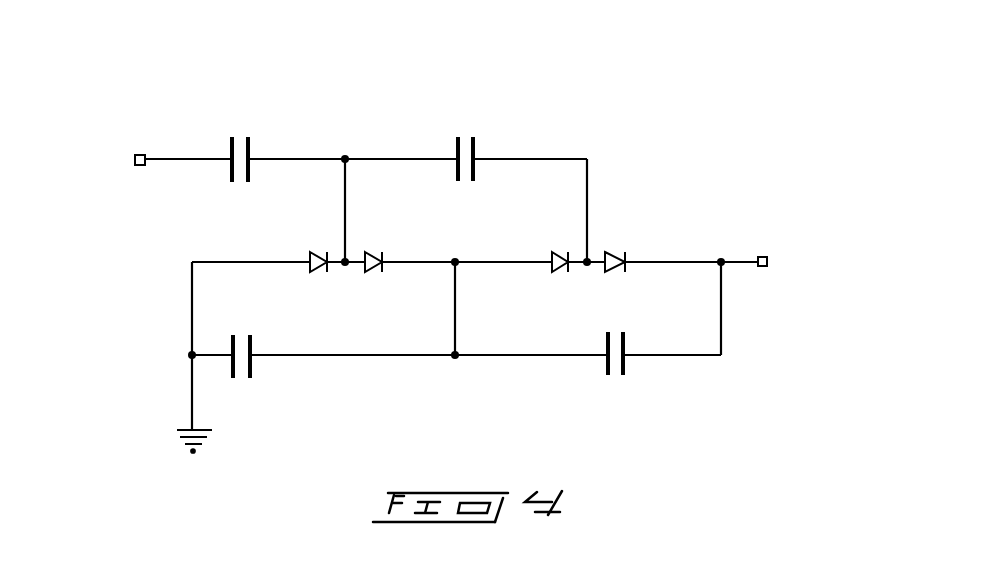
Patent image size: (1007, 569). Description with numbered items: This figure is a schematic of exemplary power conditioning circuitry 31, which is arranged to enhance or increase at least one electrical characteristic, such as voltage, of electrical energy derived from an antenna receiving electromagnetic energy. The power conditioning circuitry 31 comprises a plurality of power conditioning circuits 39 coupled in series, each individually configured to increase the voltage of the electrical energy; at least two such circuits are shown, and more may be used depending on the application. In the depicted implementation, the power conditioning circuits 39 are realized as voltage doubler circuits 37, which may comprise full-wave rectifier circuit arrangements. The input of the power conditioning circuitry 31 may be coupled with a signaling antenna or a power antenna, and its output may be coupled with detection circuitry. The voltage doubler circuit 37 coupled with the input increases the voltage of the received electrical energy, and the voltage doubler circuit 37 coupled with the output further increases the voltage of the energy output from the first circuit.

The power conditioning circuitry 31 is at (773, 155).
The voltage doubler circuit 37 is at (485, 372).
The power conditioning circuit 39 is at (367, 120).